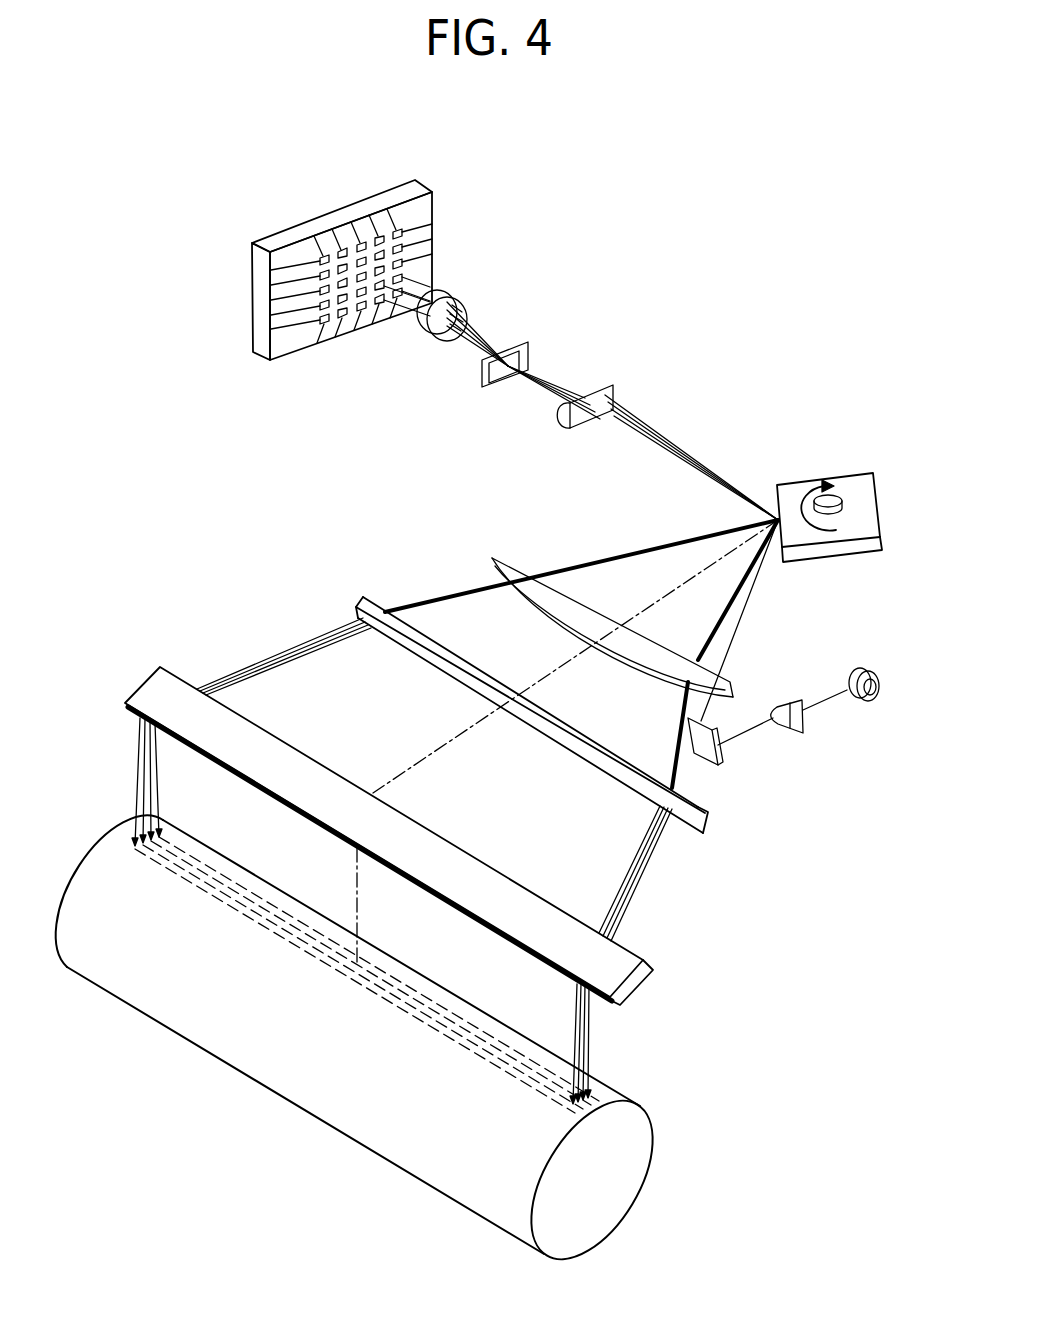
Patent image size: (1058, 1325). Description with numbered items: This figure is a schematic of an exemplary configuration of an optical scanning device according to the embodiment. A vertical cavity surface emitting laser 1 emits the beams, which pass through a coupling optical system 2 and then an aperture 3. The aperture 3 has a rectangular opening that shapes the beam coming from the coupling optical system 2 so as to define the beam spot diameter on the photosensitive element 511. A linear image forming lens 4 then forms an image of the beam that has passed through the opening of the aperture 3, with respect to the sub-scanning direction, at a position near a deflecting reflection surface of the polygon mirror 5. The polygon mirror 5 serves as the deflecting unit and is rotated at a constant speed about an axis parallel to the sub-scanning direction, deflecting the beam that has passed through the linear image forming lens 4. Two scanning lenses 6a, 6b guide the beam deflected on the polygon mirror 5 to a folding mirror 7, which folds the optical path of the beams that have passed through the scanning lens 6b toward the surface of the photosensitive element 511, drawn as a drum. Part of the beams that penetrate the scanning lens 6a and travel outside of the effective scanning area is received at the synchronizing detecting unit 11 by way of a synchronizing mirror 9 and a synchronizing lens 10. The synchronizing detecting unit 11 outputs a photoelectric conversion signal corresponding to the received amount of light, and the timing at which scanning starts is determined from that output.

The vertical cavity surface emitting laser 1 is at (432, 222).
The coupling optical system 2 is at (467, 305).
The aperture 3 is at (530, 354).
The linear image forming lens 4 is at (616, 399).
The polygon mirror 5 is at (880, 494).
The scanning lens 6a is at (492, 556).
The scanning lens 6b is at (363, 596).
The folding mirror 7 is at (157, 669).
The synchronizing mirror 9 is at (713, 767).
The synchronizing lens 10 is at (795, 735).
The synchronizing detecting unit 11 is at (866, 702).
The photosensitive element 511 is at (657, 1130).